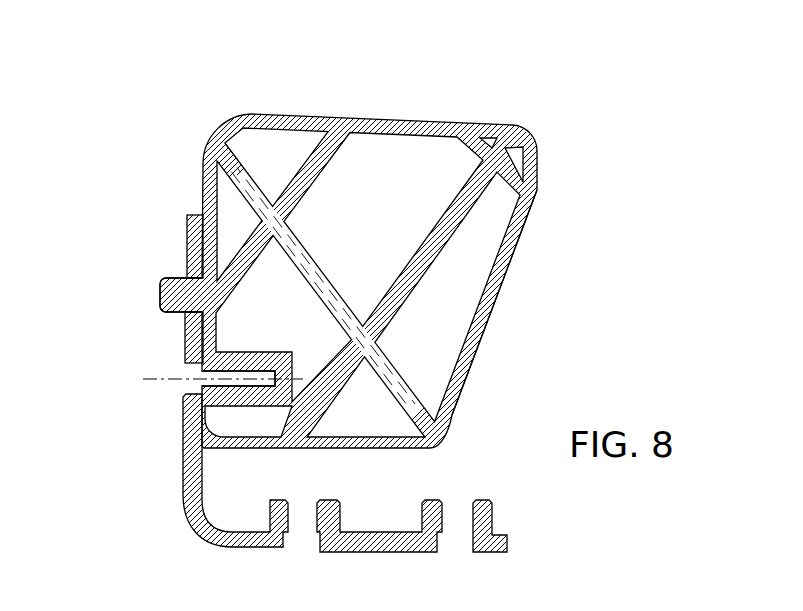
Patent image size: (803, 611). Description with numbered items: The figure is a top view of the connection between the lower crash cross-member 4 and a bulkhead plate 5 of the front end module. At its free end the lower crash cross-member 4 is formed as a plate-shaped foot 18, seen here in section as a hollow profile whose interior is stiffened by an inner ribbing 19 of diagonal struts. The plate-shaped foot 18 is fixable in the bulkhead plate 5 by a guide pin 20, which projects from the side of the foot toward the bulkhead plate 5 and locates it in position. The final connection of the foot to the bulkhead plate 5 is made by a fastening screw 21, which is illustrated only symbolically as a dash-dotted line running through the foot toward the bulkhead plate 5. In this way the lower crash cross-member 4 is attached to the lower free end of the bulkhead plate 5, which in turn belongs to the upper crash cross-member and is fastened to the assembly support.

The lower crash cross-member 4 is at (424, 118).
The bulkhead plate 5 is at (181, 476).
The plate-shaped foot 18 is at (533, 215).
The inner ribbing 19 is at (405, 277).
The guide pin 20 is at (167, 295).
The fastening screw 21 is at (168, 380).